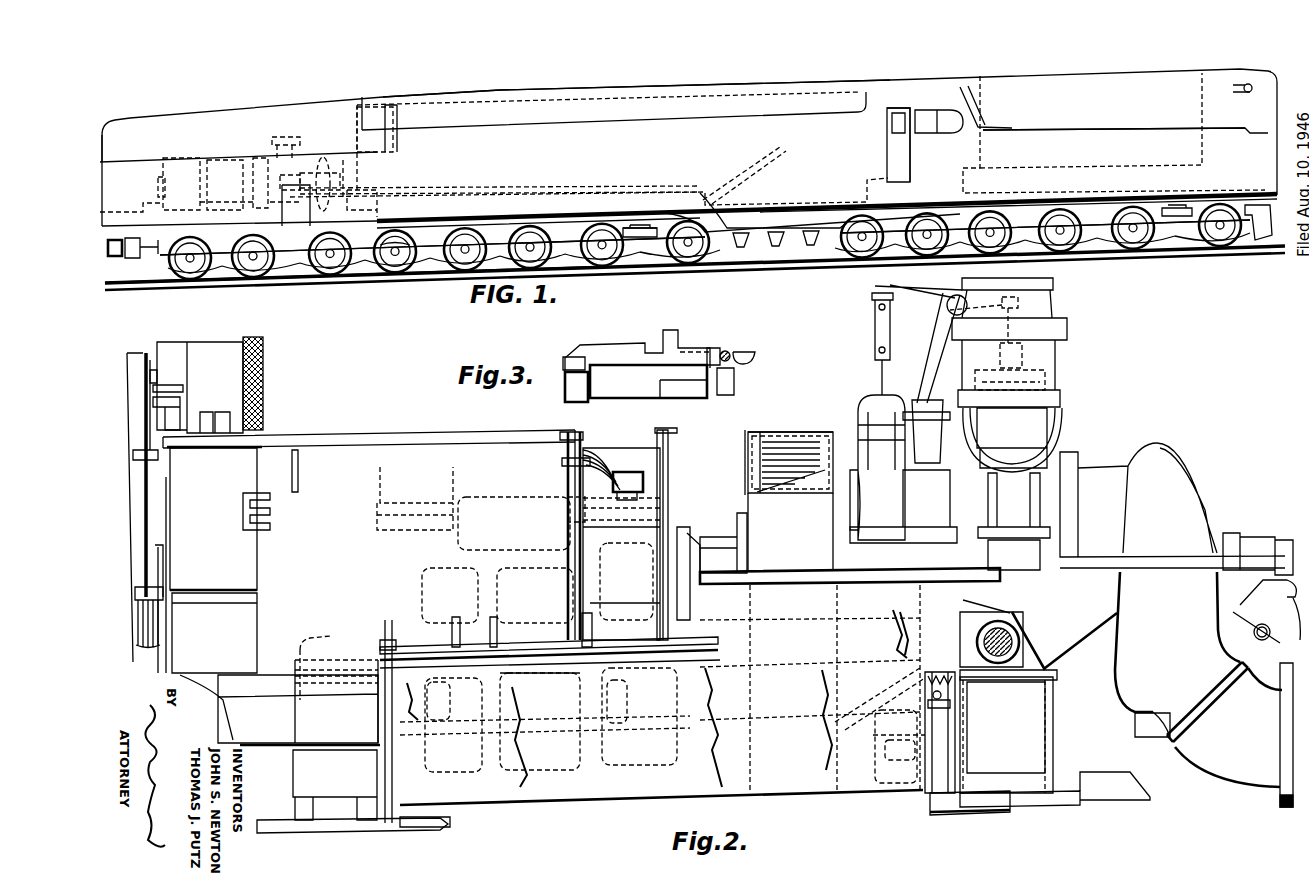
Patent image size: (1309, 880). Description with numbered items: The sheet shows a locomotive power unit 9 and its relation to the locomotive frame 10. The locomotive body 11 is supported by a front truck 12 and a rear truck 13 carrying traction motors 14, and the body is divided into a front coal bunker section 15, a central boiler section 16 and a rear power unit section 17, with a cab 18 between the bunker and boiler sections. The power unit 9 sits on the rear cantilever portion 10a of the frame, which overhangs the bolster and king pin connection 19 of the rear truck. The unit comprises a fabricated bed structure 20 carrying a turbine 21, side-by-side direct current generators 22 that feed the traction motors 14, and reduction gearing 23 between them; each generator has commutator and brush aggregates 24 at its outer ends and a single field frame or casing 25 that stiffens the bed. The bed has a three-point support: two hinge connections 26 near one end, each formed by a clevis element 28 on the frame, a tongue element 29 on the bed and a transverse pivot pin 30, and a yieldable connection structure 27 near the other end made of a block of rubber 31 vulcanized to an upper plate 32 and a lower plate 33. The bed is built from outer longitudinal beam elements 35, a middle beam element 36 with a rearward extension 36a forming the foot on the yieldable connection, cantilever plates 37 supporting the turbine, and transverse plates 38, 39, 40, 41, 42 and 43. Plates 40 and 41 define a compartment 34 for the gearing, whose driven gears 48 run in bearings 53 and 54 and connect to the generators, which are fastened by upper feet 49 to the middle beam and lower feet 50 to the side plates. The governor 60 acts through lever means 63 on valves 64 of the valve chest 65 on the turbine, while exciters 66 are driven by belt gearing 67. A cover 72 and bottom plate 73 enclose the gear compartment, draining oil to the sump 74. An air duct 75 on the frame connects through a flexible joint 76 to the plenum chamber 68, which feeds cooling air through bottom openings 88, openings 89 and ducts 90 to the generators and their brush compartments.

In FIG. 1, the power unit 9 is at (228, 193).
In FIG. 2, the power unit 9 is at (712, 500).
In FIG. 1, the frame 10 is at (615, 245).
In FIG. 1, the rear cantilever portion 10a is at (312, 262).
In FIG. 2, the rear cantilever portion 10a is at (388, 826).
In FIG. 1, the body 11 is at (712, 110).
In FIG. 1, the front truck 12 is at (1033, 242).
In FIG. 1, the rear truck 13 is at (425, 242).
In FIG. 3, the rear truck 13 is at (565, 396).
In FIG. 2, the rear truck 13 is at (300, 778).
In FIG. 1, the traction motors 14 is at (172, 275).
In FIG. 1, the front coal bunker section 15 is at (1143, 105).
In FIG. 1, the central boiler section 16 is at (627, 120).
In FIG. 1, the rear power unit section 17 is at (194, 122).
In FIG. 1, the cab 18 is at (938, 100).
In FIG. 1, the bolster and king pin connection 19 is at (434, 226).
In FIG. 3, the bed structure 20 is at (620, 387).
In FIG. 2, the bed structure 20 is at (553, 755).
In FIG. 1, the turbine 21 is at (313, 162).
In FIG. 2, the turbine 21 is at (1103, 468).
In FIG. 1, the direct current generators 22 is at (181, 158).
In FIG. 2, the direct current generators 22 is at (412, 450).
In FIG. 1, the reduction gearing 23 is at (262, 167).
In FIG. 2, the reduction gearing 23 is at (750, 458).
In FIG. 2, the commutator and brush aggregates 24 is at (630, 472).
In FIG. 2, the field frame or casing 25 is at (345, 434).
In FIG. 3, the hinge connections 26 is at (752, 365).
In FIG. 2, the hinge connections 26 is at (1030, 642).
In FIG. 3, the yieldable connection structure 27 is at (563, 378).
In FIG. 2, the yieldable connection structure 27 is at (290, 690).
In FIG. 2, the clevis elements 28 is at (1020, 674).
In FIG. 2, the tongue elements 29 is at (990, 672).
In FIG. 2, the pivot pins 30 is at (1012, 634).
In FIG. 2, the block of rubber 31 is at (315, 675).
In FIG. 2, the upper plate 32 is at (340, 675).
In FIG. 2, the lower plate 33 is at (336, 701).
In FIG. 2, the compartment 34 is at (752, 432).
In FIG. 2, the outer longitudinal plate or beam elements 35 is at (805, 770).
In FIG. 3, the middle longitudinal plate or beam element 36 is at (613, 352).
In FIG. 2, the middle longitudinal plate or beam element 36 is at (460, 540).
In FIG. 2, the rearward extension 36a is at (302, 642).
In FIG. 2, the longitudinal cantilever plate or beam elements 37 is at (1110, 607).
In FIG. 2, the transverse plate or beam element 38 is at (392, 747).
In FIG. 2, the transverse plate or beam element 39 is at (710, 604).
In FIG. 2, the transverse plate or beam element 40 is at (754, 649).
In FIG. 2, the transverse plate or beam element 41 is at (835, 643).
In FIG. 2, the transverse plate or beam element 42 is at (918, 599).
In FIG. 2, the transverse plate or beam element 43 is at (975, 606).
In FIG. 2, the driven gears 48 is at (752, 476).
In FIG. 2, the upper feet 49 is at (410, 497).
In FIG. 2, the lower feet 50 is at (527, 645).
In FIG. 2, the bearing 53 is at (845, 550).
In FIG. 2, the bearing 54 is at (714, 545).
In FIG. 2, the governor 60 is at (862, 403).
In FIG. 2, the lever means 63 is at (922, 306).
In FIG. 2, the valves 64 is at (1058, 351).
In FIG. 2, the valve chest 65 is at (1062, 420).
In FIG. 2, the exciters 66 is at (212, 350).
In FIG. 2, the belt gearing 67 is at (135, 628).
In FIG. 2, the plenum chamber 68 is at (466, 797).
In FIG. 2, the cover 72 is at (765, 433).
In FIG. 2, the bottom plate 73 is at (790, 722).
In FIG. 2, the oil reservoir or sump 74 is at (913, 795).
In FIG. 2, the air duct 75 is at (966, 768).
In FIG. 2, the flexible joint 76 is at (940, 806).
In FIG. 2, the bottom openings 88 is at (442, 762).
In FIG. 2, the openings 89 is at (624, 731).
In FIG. 2, the ducts or chambers 90 is at (272, 747).